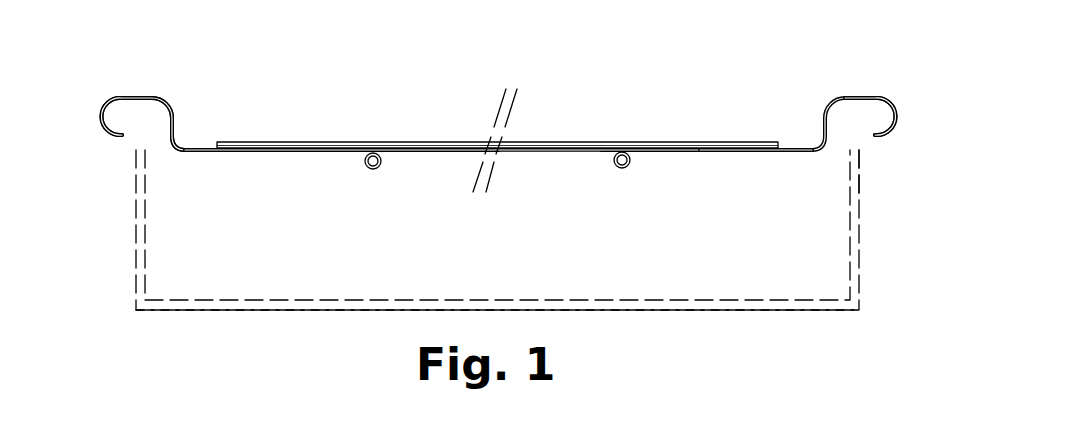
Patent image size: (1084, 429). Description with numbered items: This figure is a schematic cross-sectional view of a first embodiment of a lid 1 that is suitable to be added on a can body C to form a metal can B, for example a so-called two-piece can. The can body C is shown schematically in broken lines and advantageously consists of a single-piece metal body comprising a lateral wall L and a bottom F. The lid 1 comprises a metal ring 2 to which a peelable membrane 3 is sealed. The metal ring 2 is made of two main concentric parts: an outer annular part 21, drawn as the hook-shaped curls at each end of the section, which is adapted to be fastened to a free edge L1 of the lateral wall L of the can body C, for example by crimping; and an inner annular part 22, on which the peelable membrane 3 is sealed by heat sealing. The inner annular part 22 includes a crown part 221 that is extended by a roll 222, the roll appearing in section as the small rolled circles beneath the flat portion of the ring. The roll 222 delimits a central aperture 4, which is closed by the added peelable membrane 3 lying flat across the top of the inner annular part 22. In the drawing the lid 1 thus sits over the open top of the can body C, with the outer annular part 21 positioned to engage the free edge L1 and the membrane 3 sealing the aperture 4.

The lid 1 is at (243, 110).
The metal ring 2 is at (470, 168).
The outer annular part 21 is at (125, 98).
The inner annular part 22 is at (237, 153).
The crown part 221 is at (722, 160).
The roll 222 is at (624, 172).
The peelable membrane 3 is at (441, 142).
The central aperture 4 is at (546, 170).
The metal can B is at (912, 127).
The lateral wall L is at (460, 230).
The can body C is at (136, 268).
The free edge L1 is at (872, 144).
The bottom F is at (307, 311).